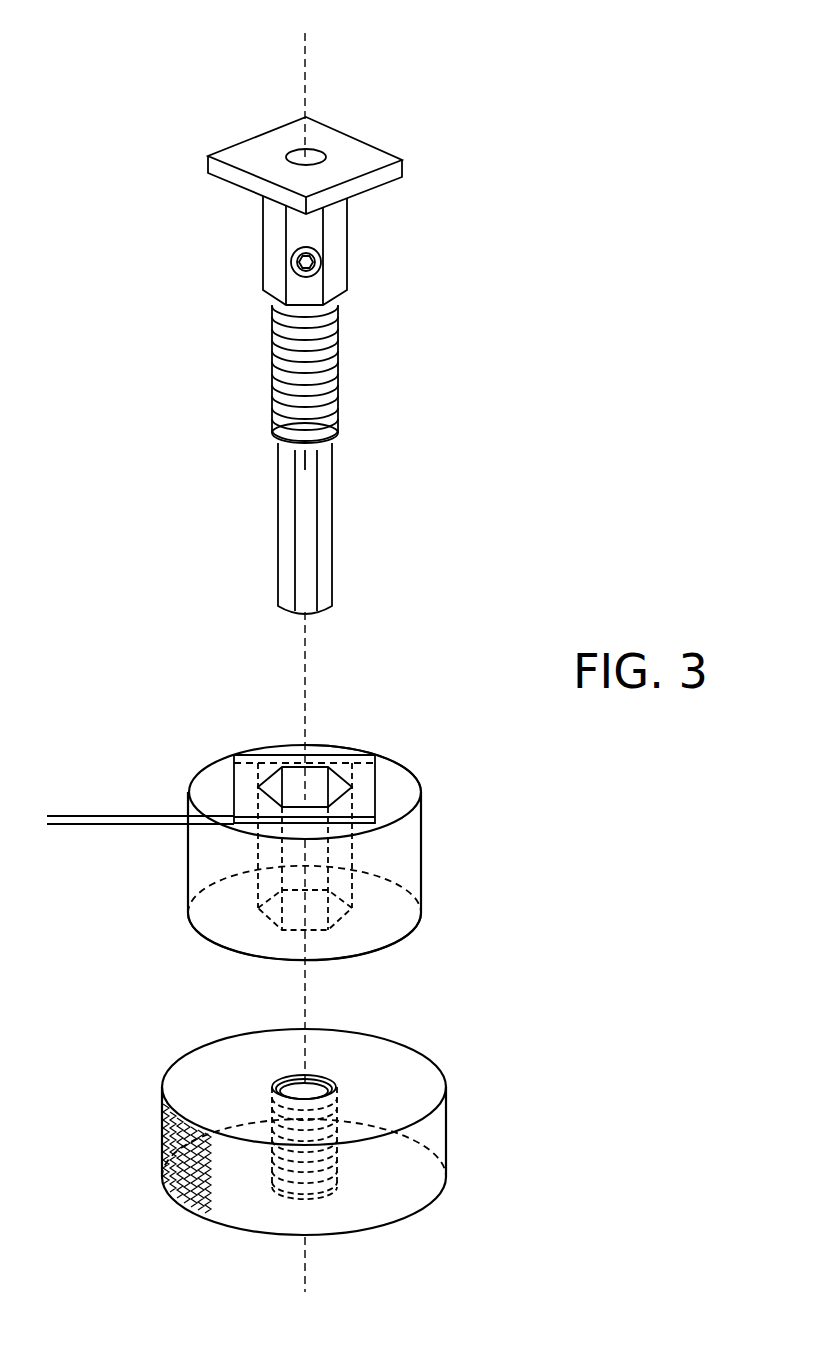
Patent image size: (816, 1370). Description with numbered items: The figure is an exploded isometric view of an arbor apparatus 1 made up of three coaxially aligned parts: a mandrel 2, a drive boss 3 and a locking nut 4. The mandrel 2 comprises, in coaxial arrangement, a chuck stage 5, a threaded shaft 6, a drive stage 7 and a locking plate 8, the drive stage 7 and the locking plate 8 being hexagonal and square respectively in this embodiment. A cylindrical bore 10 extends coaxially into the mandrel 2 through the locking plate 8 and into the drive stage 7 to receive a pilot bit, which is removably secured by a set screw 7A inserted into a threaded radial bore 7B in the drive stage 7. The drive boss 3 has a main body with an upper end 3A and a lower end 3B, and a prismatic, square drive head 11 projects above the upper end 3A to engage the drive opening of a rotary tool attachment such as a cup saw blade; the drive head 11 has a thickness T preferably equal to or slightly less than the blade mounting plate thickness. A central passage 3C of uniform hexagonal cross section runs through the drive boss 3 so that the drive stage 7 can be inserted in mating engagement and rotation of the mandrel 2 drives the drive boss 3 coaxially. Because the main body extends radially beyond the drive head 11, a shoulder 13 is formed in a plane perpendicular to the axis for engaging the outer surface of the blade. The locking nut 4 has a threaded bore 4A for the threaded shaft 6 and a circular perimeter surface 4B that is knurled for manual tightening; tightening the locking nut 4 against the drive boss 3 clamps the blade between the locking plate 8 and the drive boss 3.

The arbor apparatus 1 is at (582, 490).
The mandrel 2 is at (211, 54).
The drive boss 3 is at (403, 853).
The upper end 3A is at (403, 762).
The lower end 3B is at (413, 937).
The central passage 3C is at (295, 790).
The locking nut 4 is at (433, 1135).
The threaded bore 4A is at (298, 1082).
The perimeter surface 4B is at (245, 1205).
The chuck stage 5 is at (332, 520).
The threaded shaft 6 is at (325, 423).
The drive stage 7 is at (334, 253).
The set screw 7A is at (430, 287).
The threaded radial bore 7B is at (315, 270).
The locking plate 8 is at (353, 155).
The cylindrical bore 10 is at (317, 156).
The drive head 11 is at (234, 820).
The shoulder 13 is at (393, 800).
The thickness of drive head T is at (59, 778).